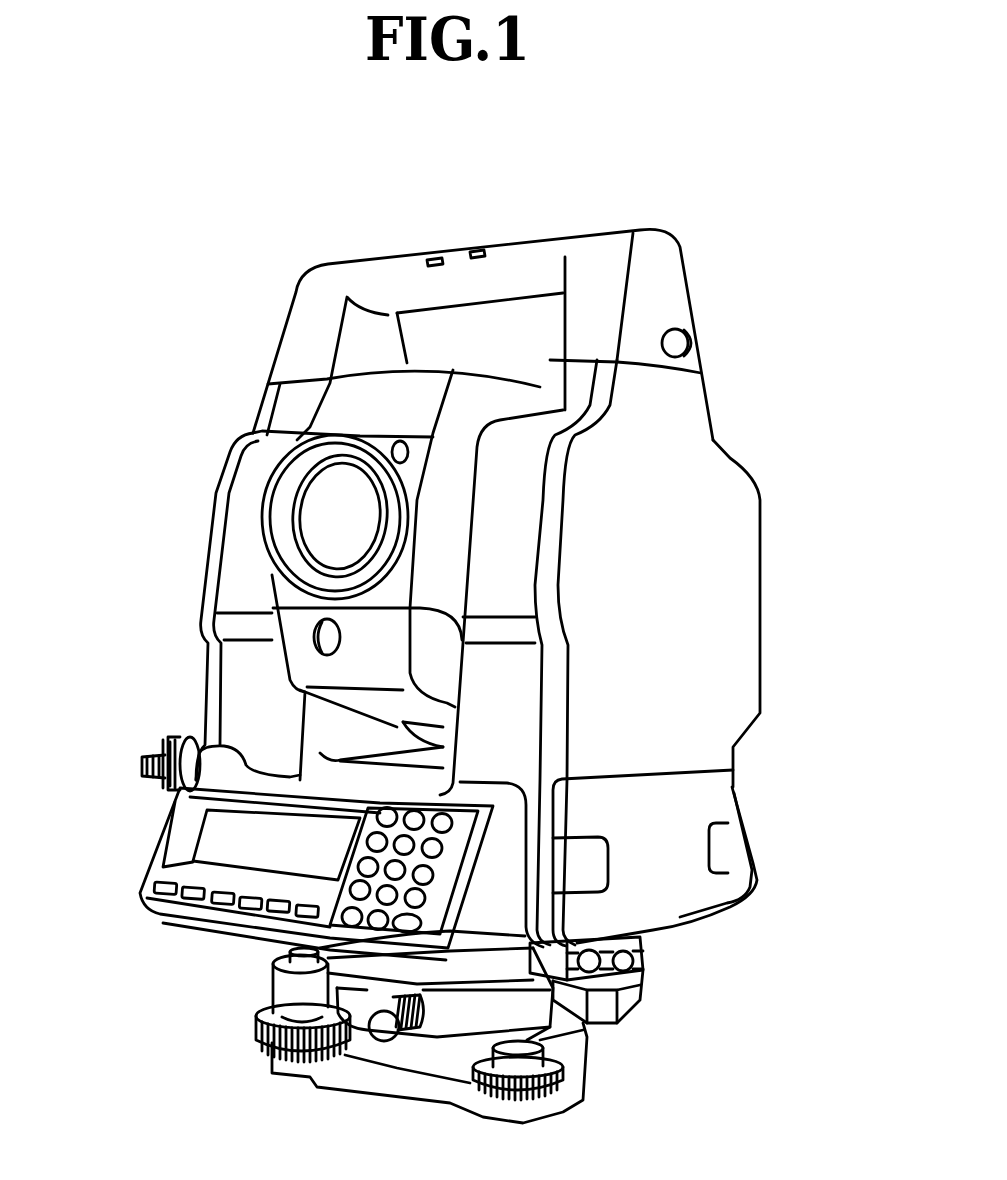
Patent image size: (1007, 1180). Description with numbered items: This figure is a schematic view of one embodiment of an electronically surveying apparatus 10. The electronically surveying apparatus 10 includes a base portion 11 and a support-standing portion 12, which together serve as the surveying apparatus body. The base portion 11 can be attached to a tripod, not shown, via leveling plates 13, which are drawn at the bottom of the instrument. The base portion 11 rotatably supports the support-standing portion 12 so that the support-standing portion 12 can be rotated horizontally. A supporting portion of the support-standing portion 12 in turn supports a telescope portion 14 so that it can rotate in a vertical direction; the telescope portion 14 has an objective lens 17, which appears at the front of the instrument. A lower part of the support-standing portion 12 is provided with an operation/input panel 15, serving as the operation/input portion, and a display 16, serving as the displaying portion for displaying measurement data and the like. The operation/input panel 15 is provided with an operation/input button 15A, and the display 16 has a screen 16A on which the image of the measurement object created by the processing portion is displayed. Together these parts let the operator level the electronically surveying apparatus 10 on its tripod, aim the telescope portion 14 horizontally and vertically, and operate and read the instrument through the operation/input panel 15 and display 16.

The electronically surveying apparatus 10 is at (796, 579).
The base portion 11 is at (655, 990).
The support-standing portion 12 is at (722, 461).
The leveling plates 13 is at (270, 1045).
The telescope portion 14 is at (327, 407).
The operation/input panel 15 is at (143, 897).
The operation/input button 15A is at (220, 906).
The display 16 is at (156, 857).
The screen 16A is at (215, 832).
The objective lens 17 is at (280, 515).